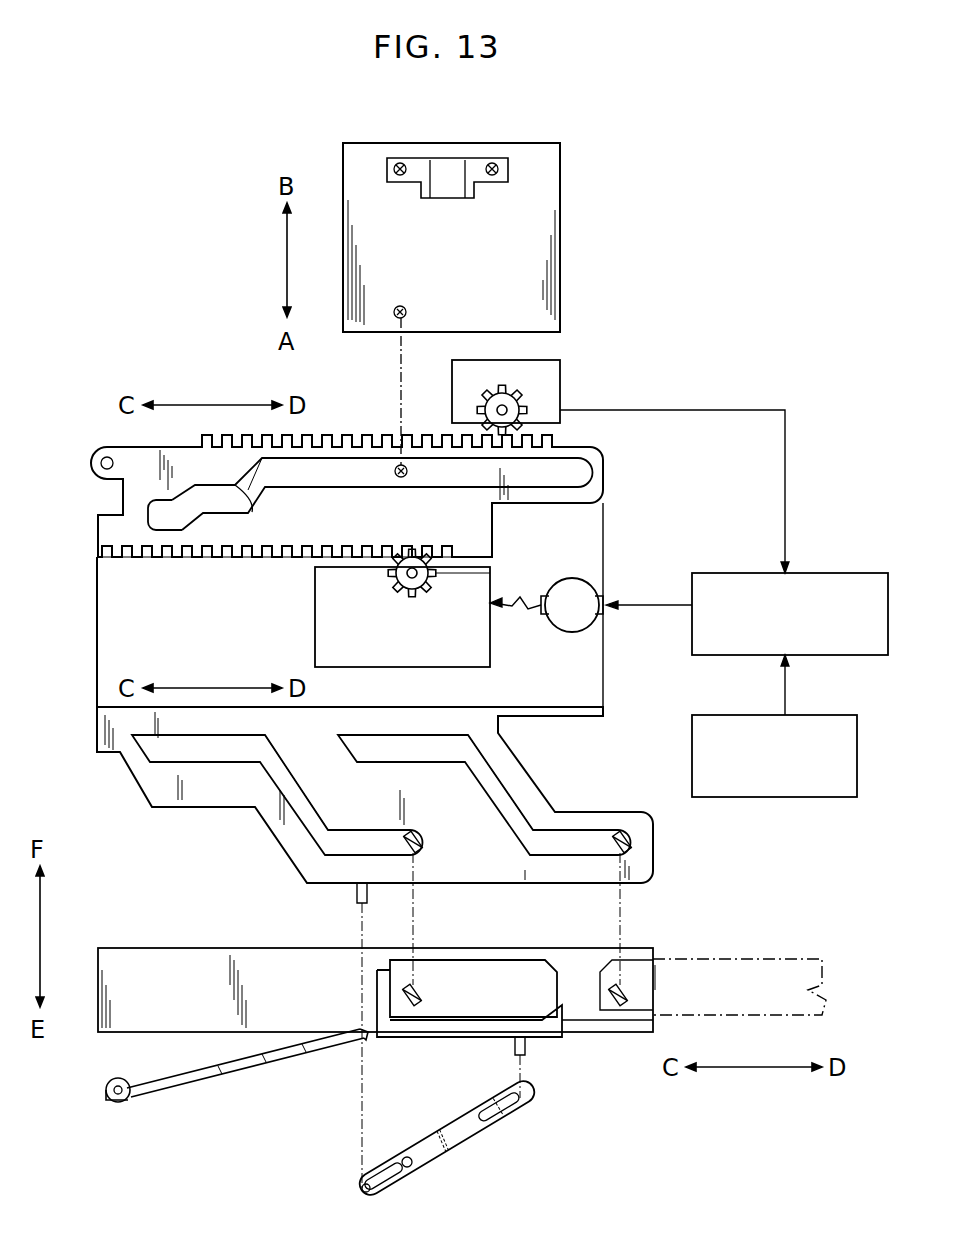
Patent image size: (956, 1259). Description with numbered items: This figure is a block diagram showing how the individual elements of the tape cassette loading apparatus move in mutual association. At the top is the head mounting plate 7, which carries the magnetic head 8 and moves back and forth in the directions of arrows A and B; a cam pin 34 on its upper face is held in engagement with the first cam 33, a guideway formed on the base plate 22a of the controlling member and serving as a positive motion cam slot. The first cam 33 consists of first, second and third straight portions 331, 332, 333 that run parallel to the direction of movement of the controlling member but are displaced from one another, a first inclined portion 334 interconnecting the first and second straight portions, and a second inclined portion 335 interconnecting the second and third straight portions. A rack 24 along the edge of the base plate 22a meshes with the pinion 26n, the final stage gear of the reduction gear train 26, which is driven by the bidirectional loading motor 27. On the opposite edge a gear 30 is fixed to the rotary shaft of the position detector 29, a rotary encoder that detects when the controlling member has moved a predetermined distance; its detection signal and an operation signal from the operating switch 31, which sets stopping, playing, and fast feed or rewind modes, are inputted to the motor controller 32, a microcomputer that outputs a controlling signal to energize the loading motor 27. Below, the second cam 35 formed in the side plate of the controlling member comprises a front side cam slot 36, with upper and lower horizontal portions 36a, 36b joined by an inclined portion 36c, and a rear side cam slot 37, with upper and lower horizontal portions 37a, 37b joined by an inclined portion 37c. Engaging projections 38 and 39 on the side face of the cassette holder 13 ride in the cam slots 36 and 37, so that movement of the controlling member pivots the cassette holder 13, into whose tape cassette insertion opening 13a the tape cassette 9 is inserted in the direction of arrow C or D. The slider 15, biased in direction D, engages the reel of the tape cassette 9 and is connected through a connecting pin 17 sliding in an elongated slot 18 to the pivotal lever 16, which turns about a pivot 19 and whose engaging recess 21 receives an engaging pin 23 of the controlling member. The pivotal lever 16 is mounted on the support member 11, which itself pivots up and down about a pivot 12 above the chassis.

The head mounting plate 7 is at (555, 212).
The magnetic head 8 is at (455, 193).
The cam pin 34 is at (404, 306).
The gear 30 is at (518, 398).
The position detector 29 is at (560, 405).
The base plate 22a is at (100, 452).
The first cam 33 is at (325, 462).
The first straight portion 331 is at (438, 470).
The second straight portion 332 is at (246, 490).
The third straight portion 333 is at (148, 516).
The first inclined portion 334 is at (285, 488).
The second inclined portion 335 is at (203, 512).
The rack 24 is at (276, 560).
The reduction gear train 26 is at (314, 619).
The pinion 26n is at (490, 576).
The loading motor 27 is at (598, 588).
The motor controller 32 is at (691, 618).
The operating switch 31 is at (692, 768).
The second cam 35 is at (486, 893).
The front side cam slot 36 is at (553, 862).
The upper horizontal portion 36a is at (563, 833).
The lower horizontal portion 36b is at (398, 735).
The inclined portion 36c is at (492, 790).
The rear side cam slot 37 is at (312, 874).
The upper horizontal portion 37a is at (376, 843).
The lower horizontal portion 37b is at (250, 752).
The inclined portion 37c is at (296, 810).
The engaging projection 38 is at (638, 838).
The engaging projection 39 is at (416, 836).
The cassette holder 13 is at (188, 958).
The tape cassette insertion opening 13a is at (656, 948).
The tape cassette 9 is at (767, 958).
The slider 15 is at (417, 1032).
The connecting pin 17 is at (527, 1046).
The elongated slot 18 is at (498, 1108).
The pivotal lever 16 is at (455, 1150).
The pivot 19 is at (416, 1168).
The engaging recess 21 is at (377, 1197).
The engaging pin 23 is at (358, 1190).
The pivot 12 is at (112, 1103).
The support member 11 is at (211, 1078).